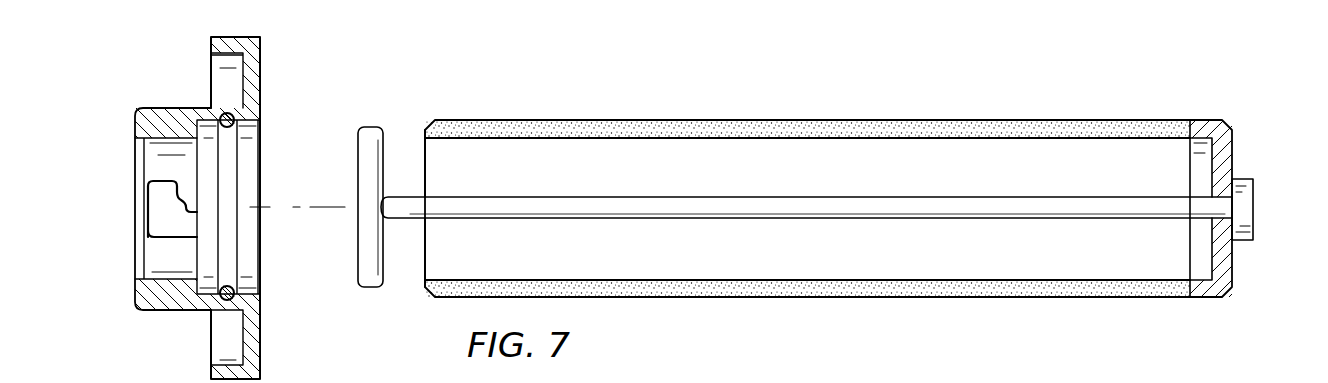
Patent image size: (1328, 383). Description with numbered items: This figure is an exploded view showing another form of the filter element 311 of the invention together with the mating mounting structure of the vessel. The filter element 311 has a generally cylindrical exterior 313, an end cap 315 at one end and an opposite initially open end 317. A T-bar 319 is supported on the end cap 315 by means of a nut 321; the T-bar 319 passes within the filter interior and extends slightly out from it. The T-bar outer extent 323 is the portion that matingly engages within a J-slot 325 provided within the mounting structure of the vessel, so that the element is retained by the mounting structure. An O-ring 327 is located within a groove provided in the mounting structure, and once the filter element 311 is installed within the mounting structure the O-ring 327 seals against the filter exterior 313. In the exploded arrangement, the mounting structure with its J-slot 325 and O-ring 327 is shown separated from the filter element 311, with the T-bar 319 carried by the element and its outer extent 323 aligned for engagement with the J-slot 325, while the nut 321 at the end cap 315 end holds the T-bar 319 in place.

The filter element 311 is at (828, 167).
The generally cylindrical exterior 313 is at (937, 120).
The end cap 315 is at (1232, 150).
The initially open end 317 is at (425, 150).
The T-bar 319 is at (795, 197).
The nut 321 is at (1253, 206).
The T-bar outer extent 323 is at (358, 162).
The J-slot 325 is at (167, 235).
The O-ring 327 is at (233, 284).